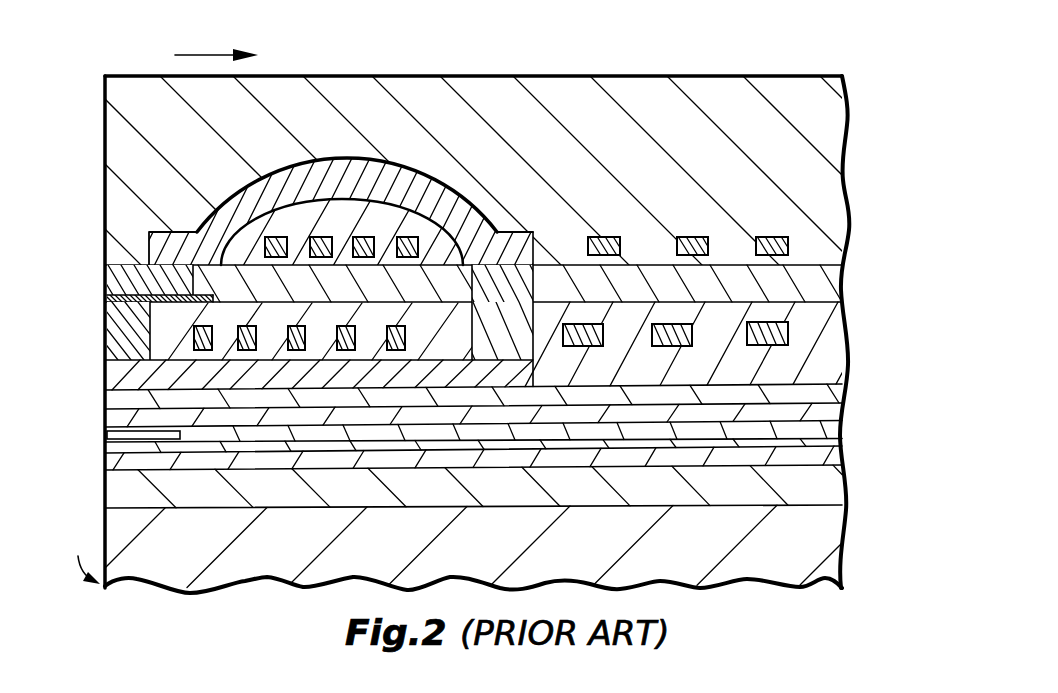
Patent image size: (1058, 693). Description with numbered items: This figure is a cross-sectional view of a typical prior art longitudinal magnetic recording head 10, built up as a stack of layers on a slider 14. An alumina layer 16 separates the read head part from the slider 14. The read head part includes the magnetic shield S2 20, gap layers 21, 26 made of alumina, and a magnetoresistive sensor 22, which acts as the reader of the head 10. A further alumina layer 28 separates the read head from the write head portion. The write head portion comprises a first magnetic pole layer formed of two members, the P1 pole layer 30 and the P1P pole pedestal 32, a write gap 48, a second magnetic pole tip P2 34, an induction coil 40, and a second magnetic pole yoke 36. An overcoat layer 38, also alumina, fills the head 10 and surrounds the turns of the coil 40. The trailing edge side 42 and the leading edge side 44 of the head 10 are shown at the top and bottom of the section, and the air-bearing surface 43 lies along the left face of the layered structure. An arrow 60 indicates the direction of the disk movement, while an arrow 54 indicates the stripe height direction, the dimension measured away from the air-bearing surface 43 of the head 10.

The magnetic recording head 10 is at (708, 63).
The slider 14 is at (503, 556).
The alumina layer 16 is at (522, 503).
The magnetic shield S2 20 is at (110, 416).
The gap layer 21 is at (245, 445).
The magnetoresistive sensor 22 is at (104, 442).
The gap layer 26 is at (330, 445).
The alumina layer 28 is at (110, 400).
The first magnetic pole P1 30 is at (110, 376).
The first magnetic pole pedestal P1P 32 is at (110, 330).
The second magnetic pole tip P2 34 is at (108, 283).
The second magnetic pole yoke 36 is at (410, 151).
The overcoat layer 38 is at (635, 156).
The induction coil 40 is at (360, 237).
The trailing edge side 42 is at (130, 76).
The air-bearing surface 43 is at (105, 147).
The leading edge side 44 is at (81, 553).
The write gap 48 is at (108, 299).
The stripe height direction arrow 54 is at (212, 55).
The direction of disk movement arrow 60 is at (86, 224).